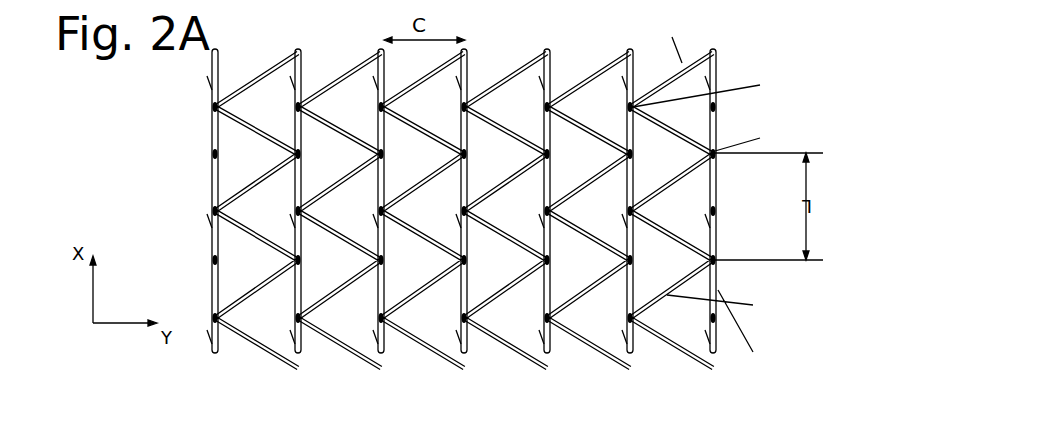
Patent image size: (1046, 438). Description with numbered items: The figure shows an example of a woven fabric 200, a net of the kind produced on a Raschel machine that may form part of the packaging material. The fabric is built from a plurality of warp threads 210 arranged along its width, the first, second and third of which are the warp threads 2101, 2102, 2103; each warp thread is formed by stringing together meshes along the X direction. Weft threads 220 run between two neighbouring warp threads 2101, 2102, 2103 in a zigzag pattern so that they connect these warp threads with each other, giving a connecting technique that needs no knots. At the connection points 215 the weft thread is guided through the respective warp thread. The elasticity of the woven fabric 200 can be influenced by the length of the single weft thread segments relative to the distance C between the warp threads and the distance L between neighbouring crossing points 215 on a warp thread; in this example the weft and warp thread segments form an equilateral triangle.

The woven fabric 200 is at (162, 147).
The weft threads 220 is at (251, 76).
The connection points 215 is at (224, 107).
The warp threads 210 is at (310, 232).
The first warp thread 2101 is at (215, 355).
The second warp thread 2102 is at (298, 355).
The third warp thread 2103 is at (381, 355).